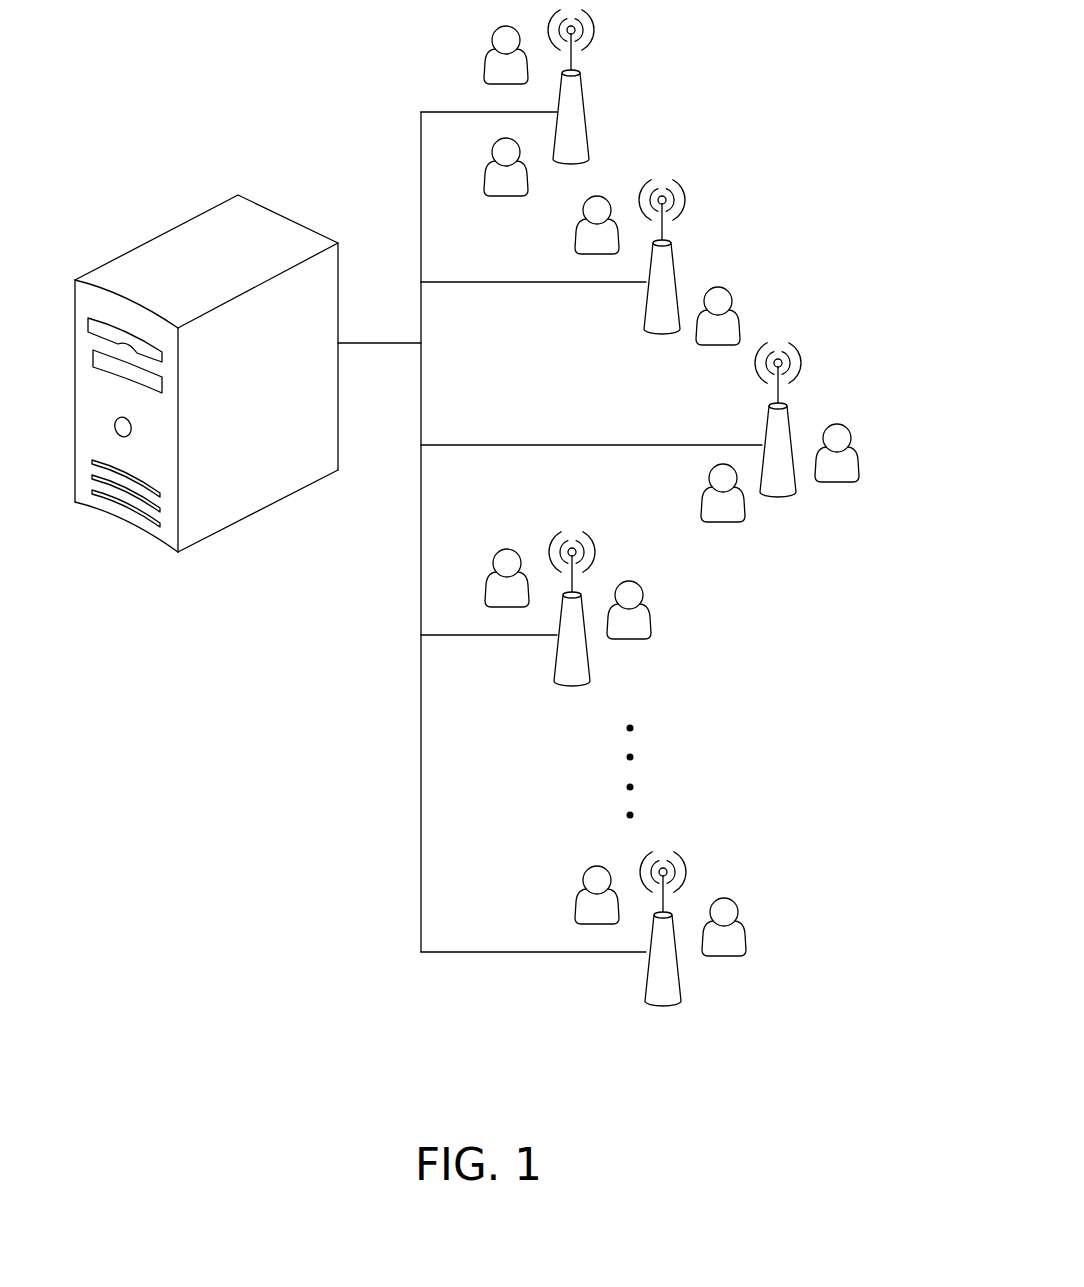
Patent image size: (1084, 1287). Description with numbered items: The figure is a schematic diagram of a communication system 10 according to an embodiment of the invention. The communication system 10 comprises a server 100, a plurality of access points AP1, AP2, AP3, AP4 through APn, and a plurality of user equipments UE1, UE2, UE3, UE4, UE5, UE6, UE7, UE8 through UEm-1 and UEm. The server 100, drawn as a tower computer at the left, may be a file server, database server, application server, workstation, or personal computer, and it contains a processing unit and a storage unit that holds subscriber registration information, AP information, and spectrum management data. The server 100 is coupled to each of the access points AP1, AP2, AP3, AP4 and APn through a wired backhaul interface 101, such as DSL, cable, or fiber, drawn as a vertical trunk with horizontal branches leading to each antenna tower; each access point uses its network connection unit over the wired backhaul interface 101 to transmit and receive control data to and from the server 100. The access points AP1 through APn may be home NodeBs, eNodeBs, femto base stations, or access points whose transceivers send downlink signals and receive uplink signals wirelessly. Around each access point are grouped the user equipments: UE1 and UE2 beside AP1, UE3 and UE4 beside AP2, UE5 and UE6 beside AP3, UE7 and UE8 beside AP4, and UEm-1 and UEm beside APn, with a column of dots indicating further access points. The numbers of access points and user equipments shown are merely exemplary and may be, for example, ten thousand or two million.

The communication system 10 is at (487, 571).
The server 100 is at (247, 500).
The wired backhaul interface 101 is at (370, 345).
The access point AP1 is at (588, 110).
The access point AP2 is at (680, 280).
The access point AP3 is at (793, 423).
The access point AP4 is at (588, 660).
The access point APn is at (682, 978).
The user equipment UE1 is at (486, 45).
The user equipment UE2 is at (486, 166).
The user equipment UE3 is at (575, 232).
The user equipment UE4 is at (742, 316).
The user equipment UE5 is at (857, 452).
The user equipment UE6 is at (699, 494).
The user equipment UE7 is at (488, 568).
The user equipment UE8 is at (652, 610).
The user equipment UEm-1 is at (556, 902).
The user equipment UEm is at (752, 932).